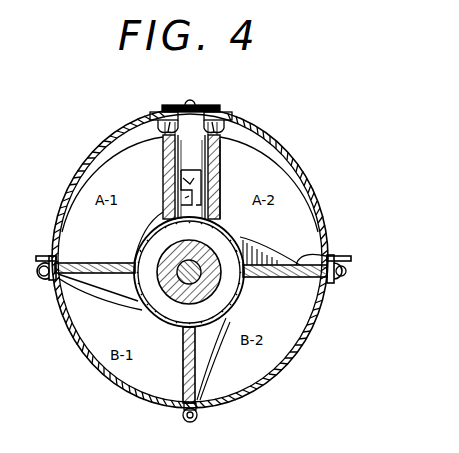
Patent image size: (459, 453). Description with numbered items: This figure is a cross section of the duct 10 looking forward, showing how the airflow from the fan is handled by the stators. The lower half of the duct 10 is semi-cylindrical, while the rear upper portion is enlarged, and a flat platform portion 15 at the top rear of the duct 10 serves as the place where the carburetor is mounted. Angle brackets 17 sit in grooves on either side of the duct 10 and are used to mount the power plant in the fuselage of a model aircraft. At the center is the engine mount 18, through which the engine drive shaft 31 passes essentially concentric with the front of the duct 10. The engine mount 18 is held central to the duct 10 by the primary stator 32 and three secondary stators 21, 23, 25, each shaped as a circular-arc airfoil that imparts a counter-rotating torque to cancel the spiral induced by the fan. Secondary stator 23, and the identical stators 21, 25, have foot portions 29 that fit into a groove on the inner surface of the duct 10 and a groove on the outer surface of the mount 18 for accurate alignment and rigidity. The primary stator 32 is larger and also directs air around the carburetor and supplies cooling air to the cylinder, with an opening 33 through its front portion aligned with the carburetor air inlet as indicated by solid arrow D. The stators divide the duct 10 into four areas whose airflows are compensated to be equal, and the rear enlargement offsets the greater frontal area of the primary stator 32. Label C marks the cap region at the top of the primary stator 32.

The duct 10 is at (190, 258).
The flat platform portion 15 is at (222, 108).
The angle brackets 17 is at (40, 256).
The engine mount 18 is at (243, 292).
The secondary stator 21 is at (330, 256).
The secondary stator 23 is at (95, 258).
The secondary stator 25 is at (183, 374).
The foot portions 29 is at (62, 278).
The drive shaft 31 is at (168, 300).
The primary stator 32 is at (221, 188).
The opening 33 is at (222, 160).
The cap flange C is at (164, 118).
The solid arrow D is at (178, 190).